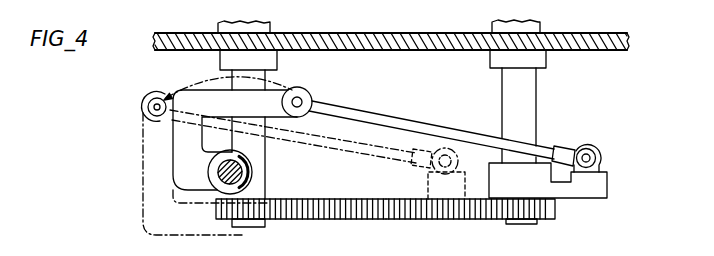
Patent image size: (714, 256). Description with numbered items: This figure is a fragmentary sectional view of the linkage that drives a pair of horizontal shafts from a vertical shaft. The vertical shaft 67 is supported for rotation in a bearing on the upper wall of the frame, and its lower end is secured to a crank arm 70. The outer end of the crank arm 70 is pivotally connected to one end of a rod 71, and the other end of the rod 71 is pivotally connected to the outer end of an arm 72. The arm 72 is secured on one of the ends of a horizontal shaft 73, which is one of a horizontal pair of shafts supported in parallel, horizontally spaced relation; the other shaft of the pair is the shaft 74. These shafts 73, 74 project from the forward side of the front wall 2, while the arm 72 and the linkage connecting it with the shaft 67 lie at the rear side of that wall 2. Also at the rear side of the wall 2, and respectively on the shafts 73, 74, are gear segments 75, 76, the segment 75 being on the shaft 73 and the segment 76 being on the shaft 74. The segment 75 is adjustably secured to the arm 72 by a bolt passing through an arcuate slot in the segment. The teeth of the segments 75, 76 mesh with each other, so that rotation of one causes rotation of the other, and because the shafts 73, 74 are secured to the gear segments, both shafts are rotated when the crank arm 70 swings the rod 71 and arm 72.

The front wall 2 is at (585, 32).
The vertical shaft 67 is at (226, 180).
The crank arm 70 is at (183, 151).
The rod 71 is at (398, 118).
The arm 72 is at (574, 192).
The horizontal shaft 73 is at (530, 100).
The horizontal shaft 74 is at (262, 165).
The gear segment 75 is at (470, 213).
The gear segment 76 is at (297, 218).